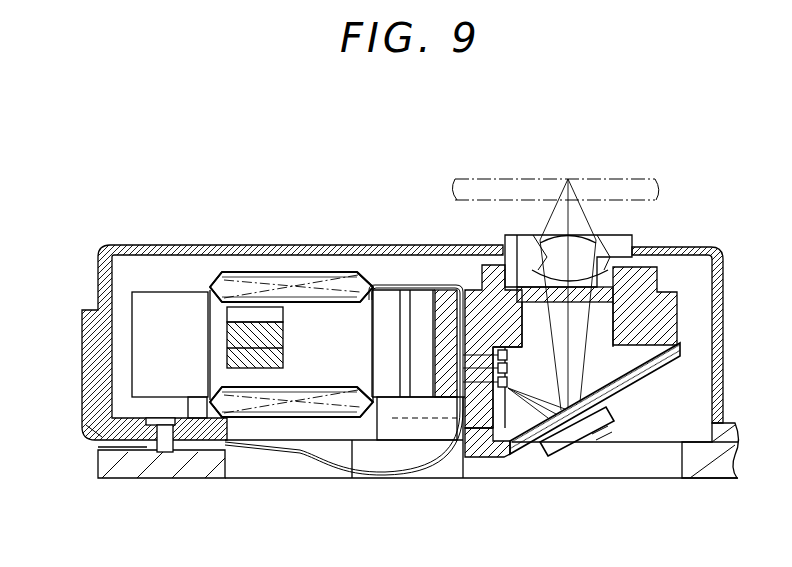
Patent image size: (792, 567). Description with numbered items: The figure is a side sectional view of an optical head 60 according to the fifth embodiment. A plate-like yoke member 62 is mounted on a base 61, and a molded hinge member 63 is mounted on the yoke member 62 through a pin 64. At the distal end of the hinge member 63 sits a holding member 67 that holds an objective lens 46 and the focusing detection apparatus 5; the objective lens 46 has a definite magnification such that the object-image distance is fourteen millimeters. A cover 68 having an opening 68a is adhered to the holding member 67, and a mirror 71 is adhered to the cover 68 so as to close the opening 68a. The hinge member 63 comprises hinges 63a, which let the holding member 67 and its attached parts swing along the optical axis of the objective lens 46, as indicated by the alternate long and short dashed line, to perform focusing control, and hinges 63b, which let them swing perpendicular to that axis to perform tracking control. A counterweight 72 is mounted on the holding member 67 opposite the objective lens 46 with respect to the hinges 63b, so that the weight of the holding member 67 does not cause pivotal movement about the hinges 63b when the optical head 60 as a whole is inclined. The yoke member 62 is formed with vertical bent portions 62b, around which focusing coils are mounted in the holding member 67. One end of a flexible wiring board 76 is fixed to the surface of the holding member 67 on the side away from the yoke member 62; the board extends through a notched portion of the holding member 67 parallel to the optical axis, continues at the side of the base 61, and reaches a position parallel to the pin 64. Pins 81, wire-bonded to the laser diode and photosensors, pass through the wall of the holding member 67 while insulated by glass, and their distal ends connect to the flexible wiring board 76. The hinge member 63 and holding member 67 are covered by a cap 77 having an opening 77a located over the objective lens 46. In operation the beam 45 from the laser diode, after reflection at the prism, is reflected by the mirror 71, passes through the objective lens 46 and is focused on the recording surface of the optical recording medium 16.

The focusing detection apparatus 5 is at (523, 447).
The optical recording medium 16 is at (620, 179).
The beam 45 is at (620, 388).
The objective lens 46 is at (625, 243).
The optical head 60 is at (407, 182).
The base 61 is at (118, 470).
The yoke member 62 is at (100, 428).
The vertical bent portion 62b is at (428, 470).
The hinge member 63 is at (246, 284).
The hinges 63a is at (212, 288).
The hinges 63b is at (405, 292).
The pin 64 is at (160, 425).
The holding member 67 is at (446, 292).
The cover 68 is at (612, 425).
The opening 68a is at (557, 443).
The mirror 71 is at (587, 430).
The counterweight 72 is at (285, 360).
The flexible wiring board 76 is at (352, 445).
The cap 77 is at (133, 243).
The opening 77a is at (666, 250).
The pins 81 is at (493, 400).